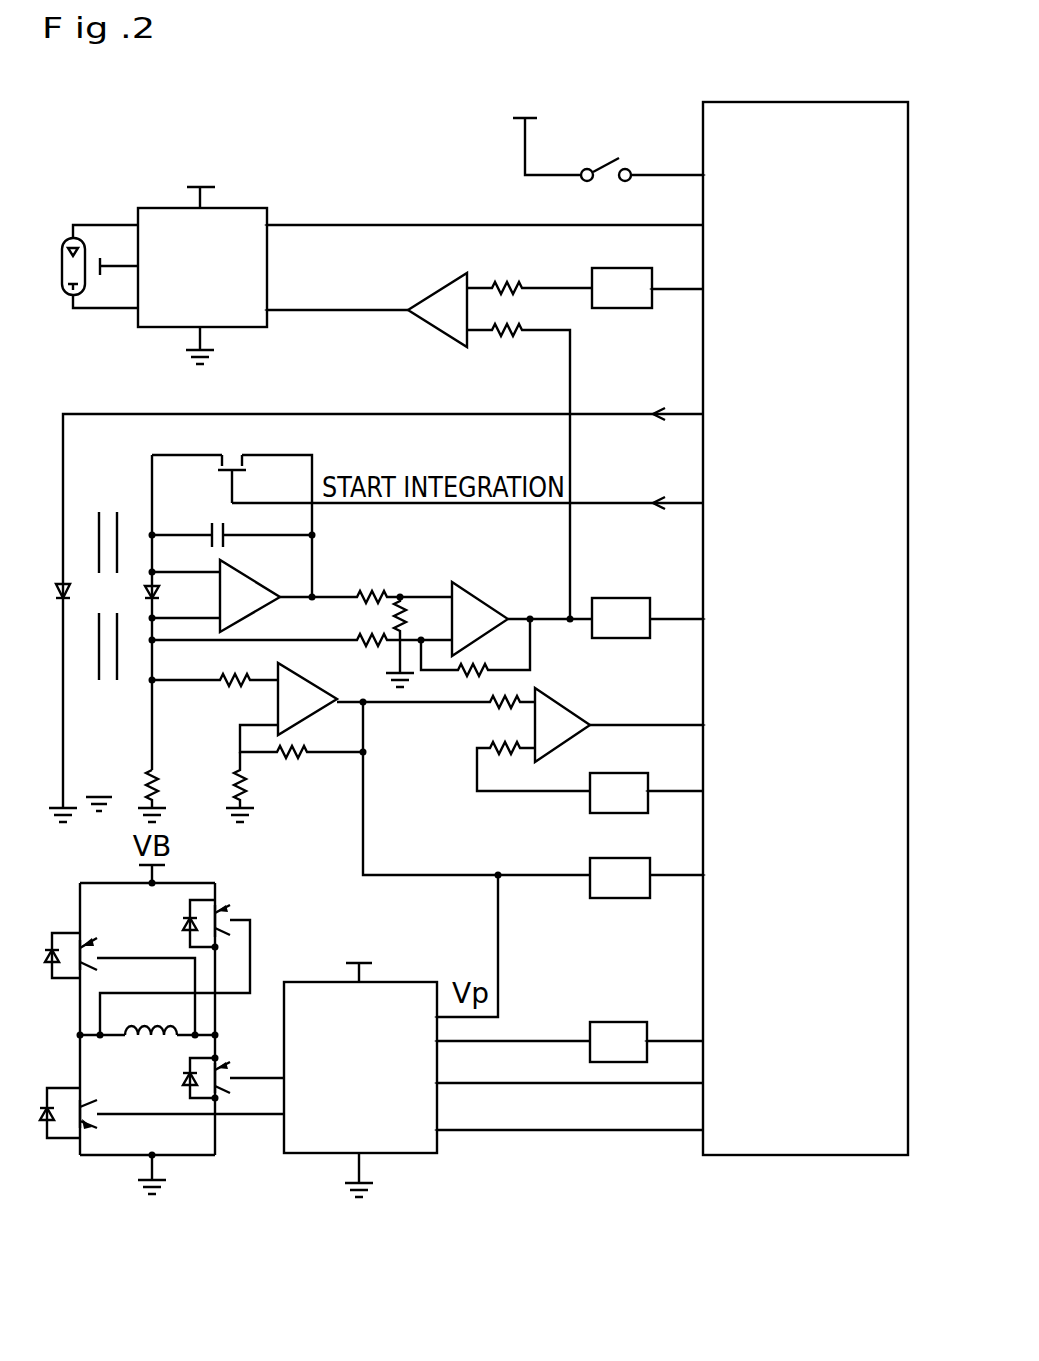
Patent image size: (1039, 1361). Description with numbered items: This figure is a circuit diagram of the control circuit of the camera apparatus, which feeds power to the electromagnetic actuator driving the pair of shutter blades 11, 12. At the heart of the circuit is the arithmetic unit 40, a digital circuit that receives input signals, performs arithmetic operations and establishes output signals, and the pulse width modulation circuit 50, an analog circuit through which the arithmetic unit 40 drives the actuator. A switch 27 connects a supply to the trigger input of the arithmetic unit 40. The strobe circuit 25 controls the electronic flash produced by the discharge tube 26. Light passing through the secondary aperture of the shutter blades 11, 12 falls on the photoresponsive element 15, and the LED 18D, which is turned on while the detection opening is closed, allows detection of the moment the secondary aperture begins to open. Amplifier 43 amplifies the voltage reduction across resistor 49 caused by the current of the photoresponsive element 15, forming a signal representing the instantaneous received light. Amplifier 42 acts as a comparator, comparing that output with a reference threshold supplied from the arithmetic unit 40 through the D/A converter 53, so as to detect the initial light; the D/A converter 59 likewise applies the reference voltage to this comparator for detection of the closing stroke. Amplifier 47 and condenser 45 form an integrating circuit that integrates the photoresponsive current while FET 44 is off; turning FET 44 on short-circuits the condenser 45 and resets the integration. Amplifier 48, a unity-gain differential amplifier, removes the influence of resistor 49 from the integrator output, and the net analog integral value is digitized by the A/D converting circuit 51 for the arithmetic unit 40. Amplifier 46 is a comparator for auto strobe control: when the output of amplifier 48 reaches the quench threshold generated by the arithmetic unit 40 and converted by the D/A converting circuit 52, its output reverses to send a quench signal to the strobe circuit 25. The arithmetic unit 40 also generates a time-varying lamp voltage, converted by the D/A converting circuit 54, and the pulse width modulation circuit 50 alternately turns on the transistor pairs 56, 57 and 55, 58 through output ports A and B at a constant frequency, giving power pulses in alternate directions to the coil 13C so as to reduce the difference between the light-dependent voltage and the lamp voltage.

The shutter blade 11 is at (99, 680).
The shutter blade 12 is at (116, 512).
The coil 13C is at (153, 1037).
The photoresponsive element 15 is at (162, 592).
The LED 18D is at (63, 577).
The strobe circuit 25 is at (245, 208).
The discharge tube 26 is at (82, 256).
The release switch 27 is at (606, 162).
The arithmetic unit 40 is at (703, 470).
The amplifier 42 is at (566, 701).
The amplifier 43 is at (273, 697).
The FET 44 is at (240, 455).
The condenser 45 is at (212, 526).
The amplifier 46 is at (442, 332).
The amplifier 47 is at (240, 568).
The amplifier 48 is at (479, 600).
The resistor 49 is at (157, 776).
The pulse width modulation circuit 50 is at (314, 982).
The A/D converting circuit 51 is at (628, 640).
The D/A converting circuit 52 is at (628, 308).
The D/A converter 53 is at (599, 813).
The D/A converting circuit 54 is at (608, 1022).
The transistor 55 is at (224, 918).
The transistor 56 is at (86, 950).
The transistor 57 is at (224, 1074).
The transistor 58 is at (88, 1128).
The D/A converter 59 is at (625, 898).